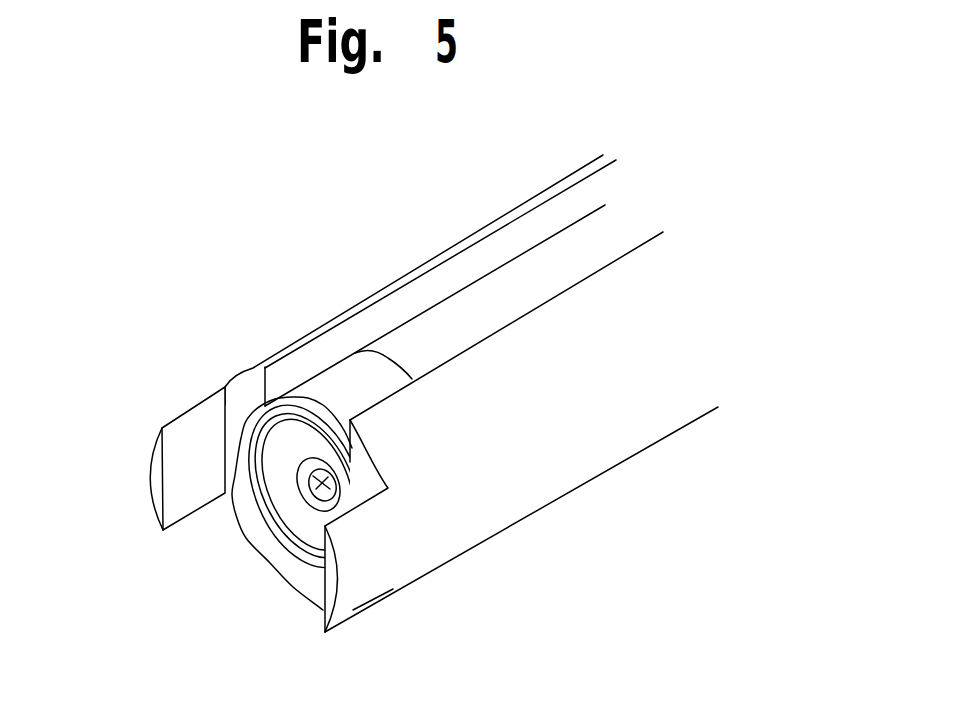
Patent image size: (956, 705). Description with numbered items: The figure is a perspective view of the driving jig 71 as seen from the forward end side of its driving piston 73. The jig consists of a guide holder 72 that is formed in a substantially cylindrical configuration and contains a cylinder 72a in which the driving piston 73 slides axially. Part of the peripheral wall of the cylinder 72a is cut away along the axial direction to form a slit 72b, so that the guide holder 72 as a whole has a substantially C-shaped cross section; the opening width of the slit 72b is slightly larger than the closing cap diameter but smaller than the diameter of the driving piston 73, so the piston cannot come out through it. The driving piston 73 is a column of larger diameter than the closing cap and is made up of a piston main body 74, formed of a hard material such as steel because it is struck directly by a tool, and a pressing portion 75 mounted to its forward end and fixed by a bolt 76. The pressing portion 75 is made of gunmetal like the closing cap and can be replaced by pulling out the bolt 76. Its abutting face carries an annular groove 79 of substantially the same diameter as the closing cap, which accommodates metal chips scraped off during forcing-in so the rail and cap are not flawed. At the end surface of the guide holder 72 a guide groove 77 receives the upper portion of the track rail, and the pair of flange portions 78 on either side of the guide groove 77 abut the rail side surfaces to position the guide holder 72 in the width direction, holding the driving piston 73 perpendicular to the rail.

The driving jig 71 is at (212, 337).
The guide holder 72 is at (495, 508).
The cylinder 72a is at (536, 252).
The slit 72b is at (290, 371).
The driving piston 73 is at (418, 162).
The piston main body 74 is at (450, 303).
The pressing portion 75 is at (345, 377).
The bolt 76 is at (307, 492).
The guide groove 77 is at (248, 385).
The flange portions 78 is at (157, 477).
The annular groove 79 is at (272, 442).